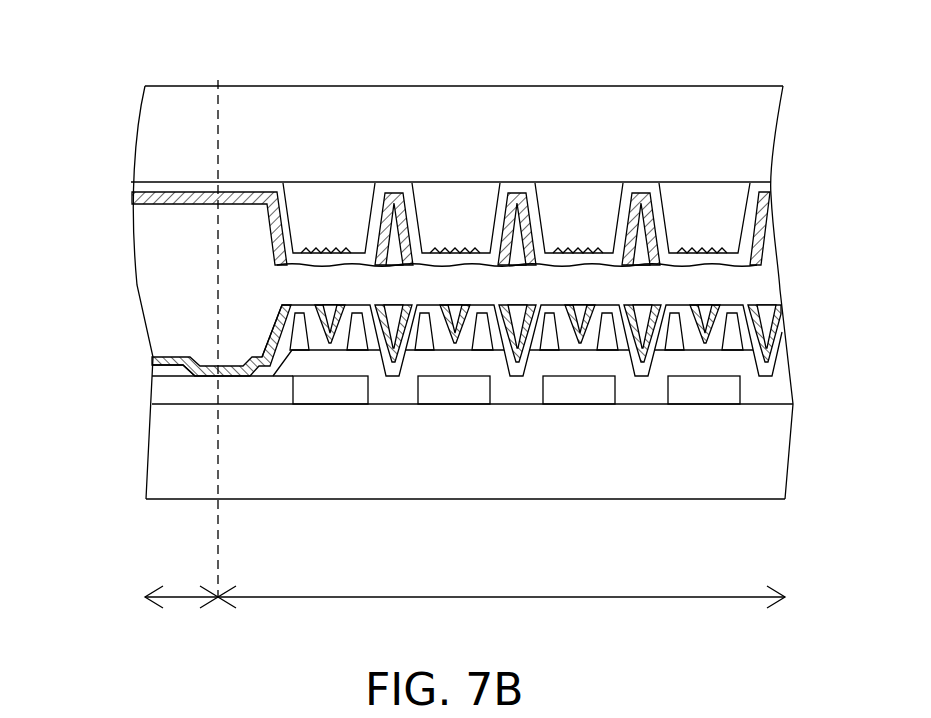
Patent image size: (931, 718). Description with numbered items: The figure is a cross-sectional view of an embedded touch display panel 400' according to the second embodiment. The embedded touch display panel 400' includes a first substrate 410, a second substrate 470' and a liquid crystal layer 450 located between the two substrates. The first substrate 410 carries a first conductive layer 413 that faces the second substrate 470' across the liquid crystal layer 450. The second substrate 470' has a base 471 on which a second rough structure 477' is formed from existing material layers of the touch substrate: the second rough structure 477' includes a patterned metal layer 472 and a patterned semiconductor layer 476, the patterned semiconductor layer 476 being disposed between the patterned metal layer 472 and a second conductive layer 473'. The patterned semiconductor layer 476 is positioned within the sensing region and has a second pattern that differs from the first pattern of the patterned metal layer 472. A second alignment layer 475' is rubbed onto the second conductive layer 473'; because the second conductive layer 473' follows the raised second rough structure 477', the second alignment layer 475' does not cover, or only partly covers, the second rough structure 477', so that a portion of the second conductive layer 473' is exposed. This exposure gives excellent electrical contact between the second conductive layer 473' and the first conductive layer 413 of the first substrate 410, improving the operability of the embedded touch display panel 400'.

The embedded touch display panel 400' is at (459, 336).
The first substrate 410 is at (110, 86).
The first conductive layer 413 is at (770, 185).
The liquid crystal layer 450 is at (767, 278).
The second substrate 470' is at (461, 448).
The base 471 is at (782, 417).
The patterned metal layer 472 is at (588, 398).
The second conductive layer 473' is at (522, 340).
The second alignment layer 475' is at (522, 336).
The patterned semiconductor layer 476 is at (552, 345).
The second rough structure 477' is at (577, 572).